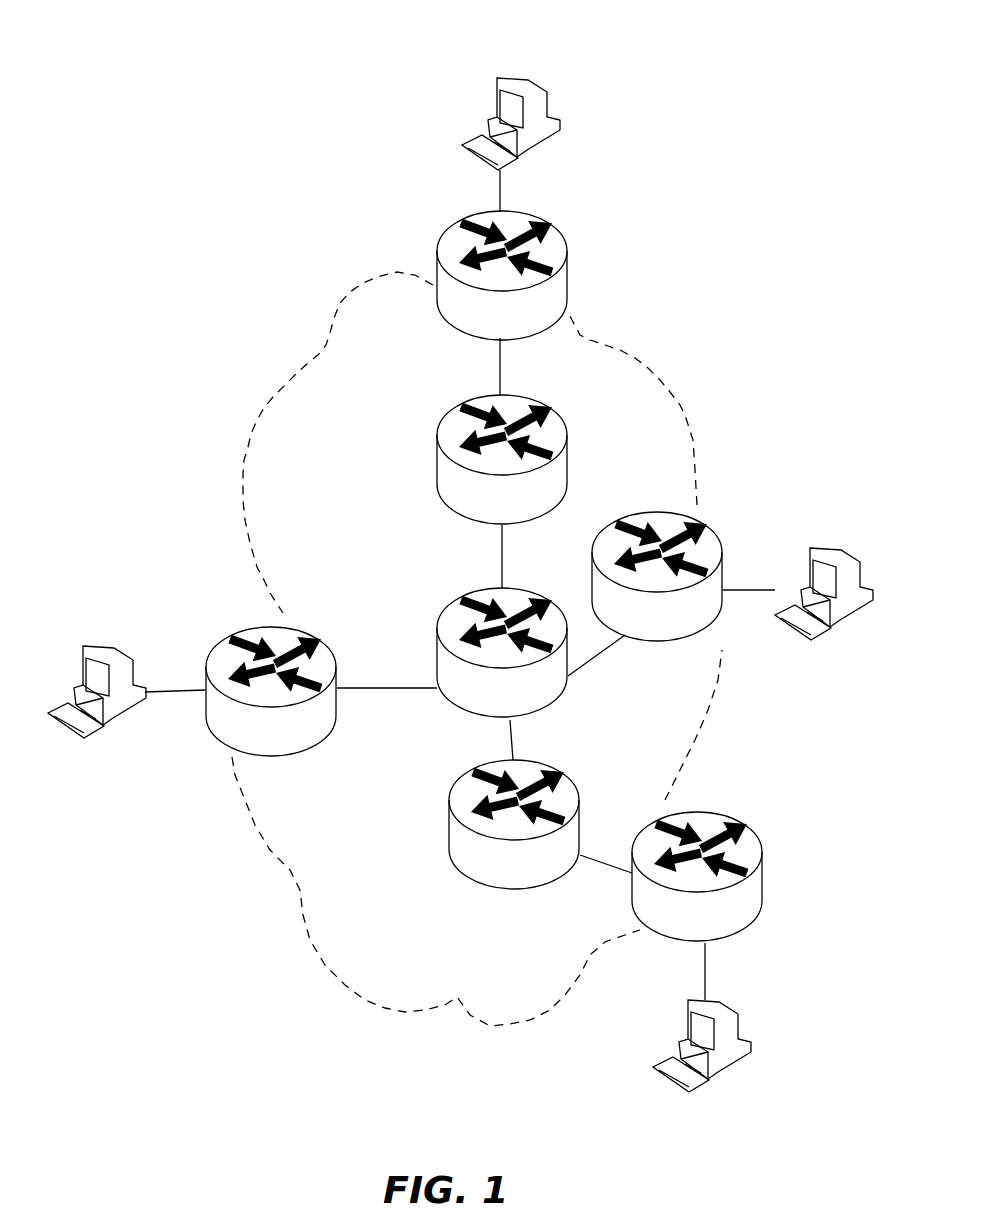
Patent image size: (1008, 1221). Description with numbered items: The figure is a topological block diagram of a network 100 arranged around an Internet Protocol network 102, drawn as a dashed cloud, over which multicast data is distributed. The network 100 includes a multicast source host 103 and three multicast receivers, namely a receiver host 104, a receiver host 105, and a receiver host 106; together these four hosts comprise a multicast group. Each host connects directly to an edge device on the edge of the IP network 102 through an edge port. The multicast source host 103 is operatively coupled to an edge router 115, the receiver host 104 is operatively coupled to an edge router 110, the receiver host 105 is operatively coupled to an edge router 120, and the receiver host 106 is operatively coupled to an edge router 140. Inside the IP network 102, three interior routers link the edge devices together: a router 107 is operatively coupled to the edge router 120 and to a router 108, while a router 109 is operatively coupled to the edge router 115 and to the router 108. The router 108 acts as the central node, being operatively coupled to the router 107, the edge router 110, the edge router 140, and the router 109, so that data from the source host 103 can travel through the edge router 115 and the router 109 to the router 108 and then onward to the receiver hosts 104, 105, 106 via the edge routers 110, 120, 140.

The network 100 is at (780, 58).
The IP network 102 is at (681, 404).
The multicast source host 103 is at (731, 1046).
The receiver host 104 is at (95, 713).
The receiver host 105 is at (565, 124).
The receiver host 106 is at (824, 609).
The router 107 is at (484, 515).
The router 108 is at (480, 709).
The router 109 is at (459, 877).
The edge router 110 is at (249, 747).
The edge router 115 is at (674, 929).
The edge router 120 is at (480, 327).
The edge router 140 is at (634, 629).